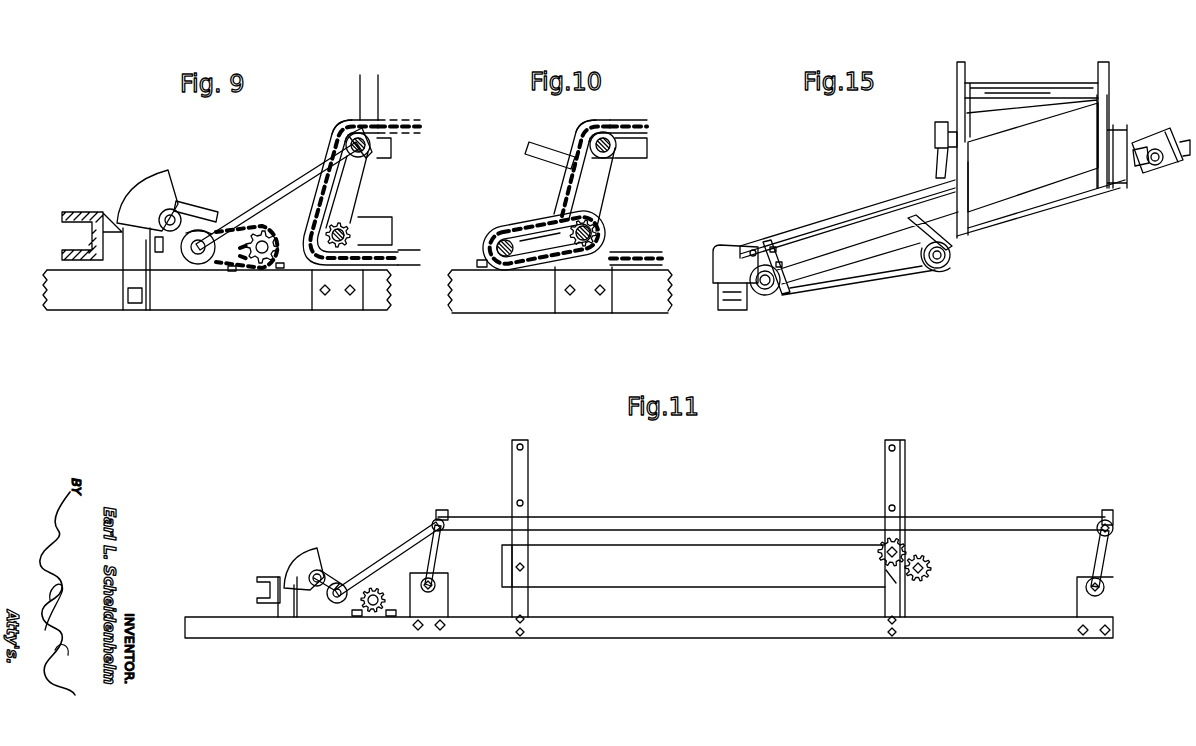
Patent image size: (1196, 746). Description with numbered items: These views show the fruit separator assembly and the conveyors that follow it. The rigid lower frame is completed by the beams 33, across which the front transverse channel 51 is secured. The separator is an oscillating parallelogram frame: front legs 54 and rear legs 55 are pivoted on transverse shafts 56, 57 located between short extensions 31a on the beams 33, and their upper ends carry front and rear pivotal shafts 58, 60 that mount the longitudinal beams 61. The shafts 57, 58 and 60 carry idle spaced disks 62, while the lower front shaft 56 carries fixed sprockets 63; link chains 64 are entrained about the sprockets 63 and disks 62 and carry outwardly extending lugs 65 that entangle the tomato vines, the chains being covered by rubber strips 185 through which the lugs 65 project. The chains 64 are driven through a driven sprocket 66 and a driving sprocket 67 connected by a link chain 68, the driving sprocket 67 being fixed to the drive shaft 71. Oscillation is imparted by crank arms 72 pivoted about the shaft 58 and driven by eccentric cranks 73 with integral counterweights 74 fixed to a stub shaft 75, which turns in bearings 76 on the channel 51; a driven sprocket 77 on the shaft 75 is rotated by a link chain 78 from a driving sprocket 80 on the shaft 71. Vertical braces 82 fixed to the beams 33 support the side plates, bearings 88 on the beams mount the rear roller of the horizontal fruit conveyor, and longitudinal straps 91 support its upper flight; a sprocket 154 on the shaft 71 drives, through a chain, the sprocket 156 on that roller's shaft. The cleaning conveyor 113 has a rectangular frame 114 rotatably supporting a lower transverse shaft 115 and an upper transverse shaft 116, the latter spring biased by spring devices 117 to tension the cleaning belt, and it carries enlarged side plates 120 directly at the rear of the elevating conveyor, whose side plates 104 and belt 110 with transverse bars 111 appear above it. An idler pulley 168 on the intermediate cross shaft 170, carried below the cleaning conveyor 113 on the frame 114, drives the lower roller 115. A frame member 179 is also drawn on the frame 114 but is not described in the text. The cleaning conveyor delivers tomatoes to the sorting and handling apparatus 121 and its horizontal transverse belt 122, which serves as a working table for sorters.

In FIG. 9, the beams 33 is at (288, 311).
In FIG. 10, the beams 33 is at (505, 314).
In FIG. 11, the beams 33 is at (593, 639).
In FIG. 9, the mounting block 31a is at (386, 252).
In FIG. 10, the mounting block 31a is at (616, 283).
In FIG. 11, the mounting block 31a is at (448, 606).
In FIG. 9, the front transverse channel 51 is at (70, 223).
In FIG. 11, the front transverse channel 51 is at (258, 585).
In FIG. 9, the front legs 54 is at (372, 203).
In FIG. 10, the front legs 54 is at (605, 198).
In FIG. 11, the front legs 54 is at (446, 560).
In FIG. 11, the rear legs 55 is at (1108, 561).
In FIG. 9, the transverse shaft 56 is at (361, 238).
In FIG. 10, the transverse shaft 56 is at (608, 232).
In FIG. 11, the transverse shaft 56 is at (437, 585).
In FIG. 11, the transverse shaft 57 is at (1106, 587).
In FIG. 9, the front pivotal shaft 58 is at (368, 160).
In FIG. 10, the front pivotal shaft 58 is at (617, 147).
In FIG. 11, the front pivotal shaft 58 is at (432, 525).
In FIG. 11, the rear pivotal shaft 60 is at (1114, 529).
In FIG. 9, the longitudinal beams 61 is at (393, 148).
In FIG. 10, the longitudinal beams 61 is at (649, 154).
In FIG. 11, the longitudinal beams 61 is at (771, 515).
In FIG. 9, the spaced disks 62 is at (371, 153).
In FIG. 10, the spaced disks 62 is at (612, 160).
In FIG. 11, the spaced disks 62 is at (438, 511).
In FIG. 9, the sprockets 63 is at (378, 223).
In FIG. 9, the link chains 64 is at (406, 127).
In FIG. 10, the link chains 64 is at (651, 127).
In FIG. 9, the lugs 65 is at (380, 90).
In FIG. 10, the lugs 65 is at (545, 140).
In FIG. 10, the driven sprocket 66 is at (553, 270).
In FIG. 10, the driving sprocket 67 is at (540, 236).
In FIG. 10, the link chain 68 is at (519, 216).
In FIG. 9, the drive shaft 71 is at (270, 234).
In FIG. 10, the drive shaft 71 is at (487, 242).
In FIG. 11, the drive shaft 71 is at (384, 591).
In FIG. 9, the crank arms 72 is at (295, 172).
In FIG. 11, the crank arms 72 is at (374, 562).
In FIG. 9, the eccentric cranks 73 is at (215, 213).
In FIG. 11, the eccentric cranks 73 is at (322, 570).
In FIG. 9, the counterweights 74 is at (151, 199).
In FIG. 11, the counterweights 74 is at (284, 575).
In FIG. 9, the stub shaft 75 is at (179, 209).
In FIG. 9, the bearings 76 is at (158, 256).
In FIG. 9, the driven sprocket 77 is at (178, 258).
In FIG. 9, the link chain 78 is at (233, 208).
In FIG. 9, the driving sprocket 80 is at (248, 270).
In FIG. 11, the vertical braces 82 is at (530, 475).
In FIG. 11, the bearings 88 is at (910, 551).
In FIG. 11, the longitudinal straps 91 is at (572, 575).
In FIG. 15, the side plates 104 is at (957, 95).
In FIG. 15, the conveyor belt 110 is at (1050, 95).
In FIG. 15, the transverse bars 111 is at (1015, 90).
In FIG. 15, the cleaning conveyor 113 is at (1019, 231).
In FIG. 15, the rectangular frame 114 is at (861, 259).
In FIG. 15, the lower transverse shaft 115 is at (766, 288).
In FIG. 15, the upper transverse shaft 116 is at (1157, 166).
In FIG. 15, the spring devices 117 is at (1156, 147).
In FIG. 15, the enlarged side plates 120 is at (1043, 155).
In FIG. 15, the sorting and handling apparatus 121 is at (733, 245).
In FIG. 15, the horizontal transverse belt 122 is at (730, 311).
In FIG. 11, the sprocket 154 is at (378, 618).
In FIG. 11, the sprocket 156 is at (933, 568).
In FIG. 15, the idler pulley 168 is at (951, 265).
In FIG. 15, the intermediate cross shaft 170 is at (937, 268).
In FIG. 15, the rail 179 is at (848, 233).
In FIG. 9, the rubber strips 185 is at (340, 127).
In FIG. 10, the rubber strips 185 is at (601, 118).